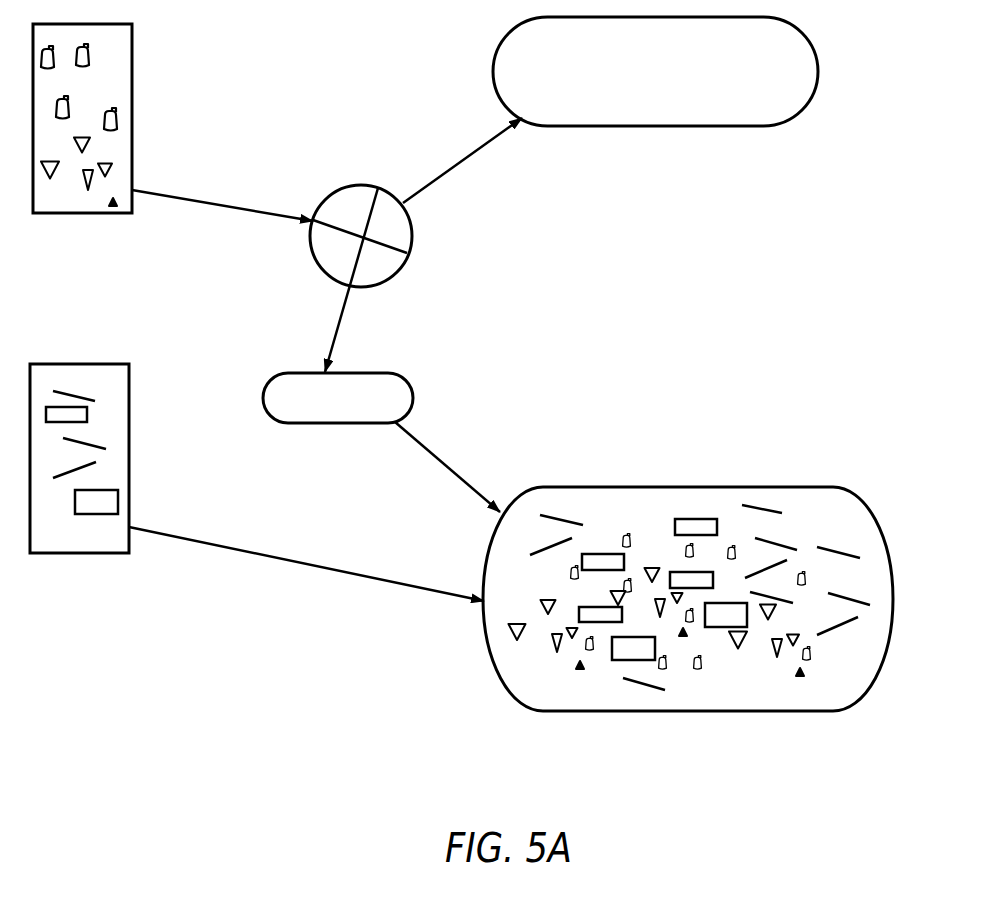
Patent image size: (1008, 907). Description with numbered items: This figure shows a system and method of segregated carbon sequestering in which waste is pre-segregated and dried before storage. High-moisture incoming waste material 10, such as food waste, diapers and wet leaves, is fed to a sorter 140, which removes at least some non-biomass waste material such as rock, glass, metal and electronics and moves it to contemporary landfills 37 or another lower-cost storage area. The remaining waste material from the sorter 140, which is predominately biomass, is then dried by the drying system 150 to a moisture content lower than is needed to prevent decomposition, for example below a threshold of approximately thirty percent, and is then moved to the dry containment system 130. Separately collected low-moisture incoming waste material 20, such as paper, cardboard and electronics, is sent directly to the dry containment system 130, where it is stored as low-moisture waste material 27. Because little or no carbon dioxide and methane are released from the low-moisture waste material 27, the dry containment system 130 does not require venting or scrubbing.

The high-moisture incoming waste material 10 is at (74, 213).
The low-moisture incoming waste material 20 is at (73, 553).
The sorter 140 is at (340, 185).
The contemporary landfills 37 is at (682, 126).
The drying system 150 is at (318, 423).
The dry containment system 130 is at (688, 644).
The low-moisture waste material 27 is at (829, 526).